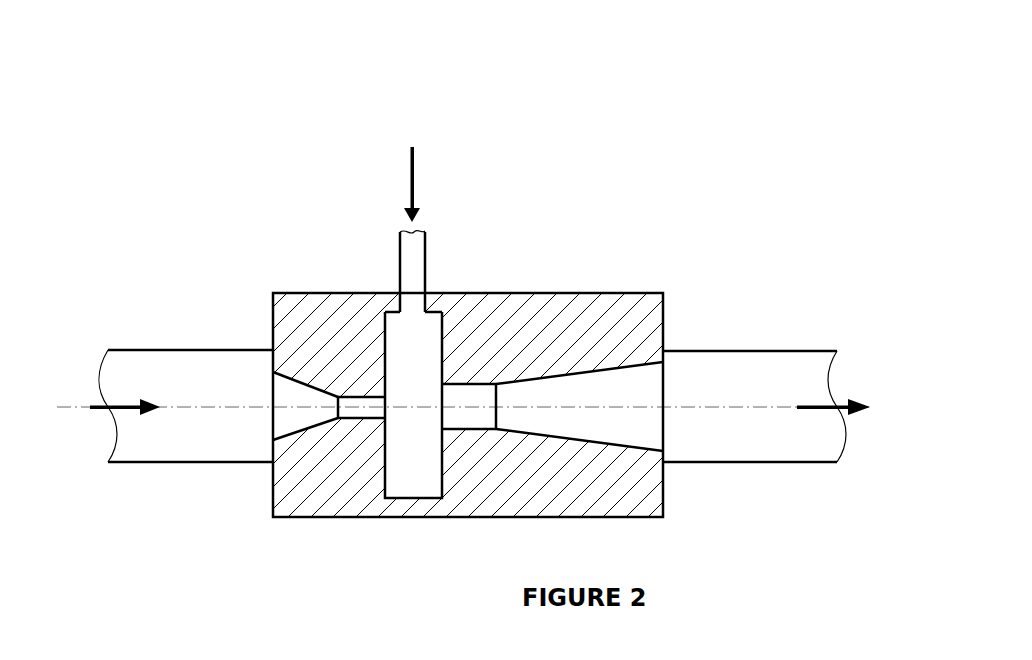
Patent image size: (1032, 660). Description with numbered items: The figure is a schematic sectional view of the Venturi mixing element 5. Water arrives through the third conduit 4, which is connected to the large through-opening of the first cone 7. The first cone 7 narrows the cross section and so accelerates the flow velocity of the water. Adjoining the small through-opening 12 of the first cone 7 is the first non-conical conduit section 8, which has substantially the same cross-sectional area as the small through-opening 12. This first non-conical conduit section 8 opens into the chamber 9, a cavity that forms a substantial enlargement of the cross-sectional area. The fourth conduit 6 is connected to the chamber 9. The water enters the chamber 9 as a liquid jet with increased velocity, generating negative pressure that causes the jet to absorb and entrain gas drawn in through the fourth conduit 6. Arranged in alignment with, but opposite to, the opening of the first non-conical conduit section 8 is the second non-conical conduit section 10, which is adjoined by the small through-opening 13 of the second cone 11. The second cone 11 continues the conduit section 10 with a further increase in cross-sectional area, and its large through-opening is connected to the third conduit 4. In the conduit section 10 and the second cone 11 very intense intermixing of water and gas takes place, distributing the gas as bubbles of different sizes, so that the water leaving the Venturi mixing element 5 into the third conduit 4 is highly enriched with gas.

The third conduit 4 is at (135, 350).
The Venturi mixing element 5 is at (467, 315).
The fourth conduit 6 is at (428, 230).
The first cone 7 is at (273, 343).
The first non-conical conduit section 8 is at (362, 392).
The chamber 9 is at (432, 318).
The second non-conical conduit section 10 is at (475, 383).
The second cone 11 is at (577, 370).
The small through-opening of the first cone 12 is at (336, 394).
The small through-opening of the second cone 13 is at (497, 392).